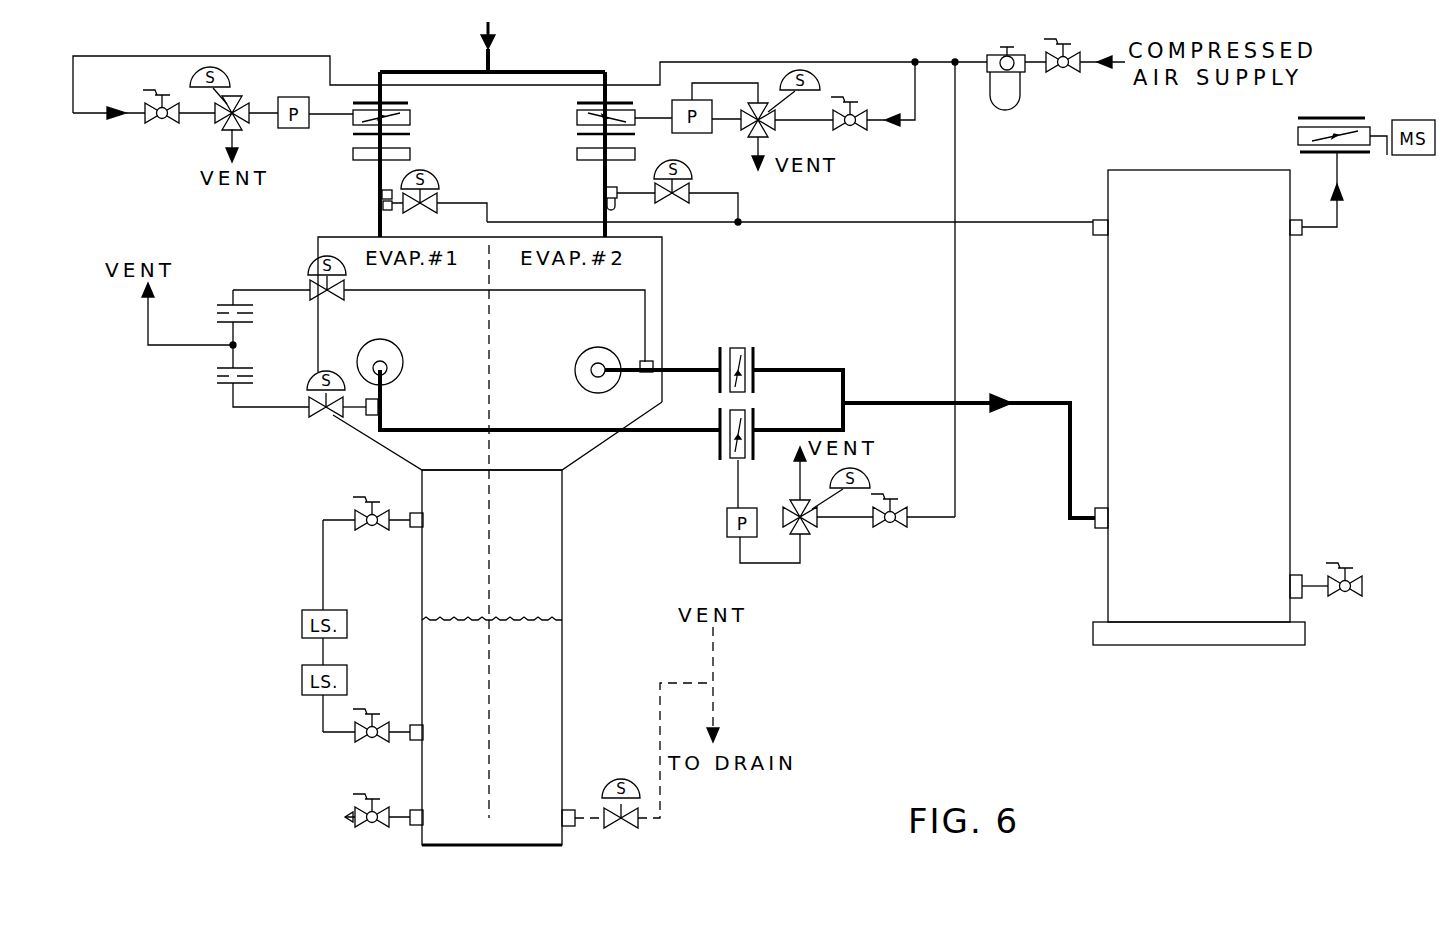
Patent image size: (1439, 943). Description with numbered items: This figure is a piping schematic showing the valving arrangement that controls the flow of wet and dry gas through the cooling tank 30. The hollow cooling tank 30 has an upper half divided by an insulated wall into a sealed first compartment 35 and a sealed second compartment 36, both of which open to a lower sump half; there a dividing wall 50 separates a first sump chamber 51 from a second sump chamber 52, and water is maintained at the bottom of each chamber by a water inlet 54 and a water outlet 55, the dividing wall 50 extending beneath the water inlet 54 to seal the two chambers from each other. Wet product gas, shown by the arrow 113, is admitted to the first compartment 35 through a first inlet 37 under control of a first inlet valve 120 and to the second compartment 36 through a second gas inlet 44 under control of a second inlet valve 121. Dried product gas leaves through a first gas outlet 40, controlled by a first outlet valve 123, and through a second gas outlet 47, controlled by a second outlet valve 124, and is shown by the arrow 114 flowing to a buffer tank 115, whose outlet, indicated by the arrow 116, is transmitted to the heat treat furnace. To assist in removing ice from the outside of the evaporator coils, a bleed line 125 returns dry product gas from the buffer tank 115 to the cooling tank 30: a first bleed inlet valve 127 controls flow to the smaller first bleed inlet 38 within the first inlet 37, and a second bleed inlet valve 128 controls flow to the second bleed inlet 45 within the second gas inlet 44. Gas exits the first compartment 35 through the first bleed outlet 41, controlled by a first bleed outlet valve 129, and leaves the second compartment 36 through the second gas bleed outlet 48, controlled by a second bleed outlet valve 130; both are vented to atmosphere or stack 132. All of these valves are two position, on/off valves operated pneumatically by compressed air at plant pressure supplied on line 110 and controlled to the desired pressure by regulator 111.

The cooling tank 30 is at (366, 456).
The first compartment 35 is at (440, 330).
The second compartment 36 is at (578, 330).
The first inlet 37 is at (353, 153).
The first bleed inlet 38 is at (381, 192).
The first gas outlet 40 is at (388, 368).
The first bleed outlet 41 is at (362, 430).
The second gas inlet 44 is at (577, 155).
The second bleed inlet 45 is at (607, 210).
The second gas outlet 47 is at (577, 367).
The second gas bleed outlet 48 is at (654, 362).
The dividing wall 50 is at (489, 577).
The first sump chamber 51 is at (466, 553).
The second sump chamber 52 is at (540, 553).
The water inlet 54 is at (410, 828).
The water outlet 55 is at (573, 812).
The line 110 is at (1100, 63).
The regulator 111 is at (987, 60).
The wet product gas arrow 113 is at (497, 43).
The dried product gas arrow 114 is at (1006, 400).
The buffer tank 115 is at (1228, 387).
The buffer tank outlet arrow 116 is at (1345, 195).
The first inlet valve 120 is at (372, 106).
The second inlet valve 121 is at (623, 105).
The first outlet valve 123 is at (758, 425).
The second outlet valve 124 is at (758, 362).
The bleed line 125 is at (826, 223).
The first bleed inlet valve 127 is at (440, 182).
The second bleed inlet valve 128 is at (714, 168).
The first bleed outlet valve 129 is at (316, 380).
The second bleed outlet valve 130 is at (312, 262).
The stack 132 is at (208, 343).